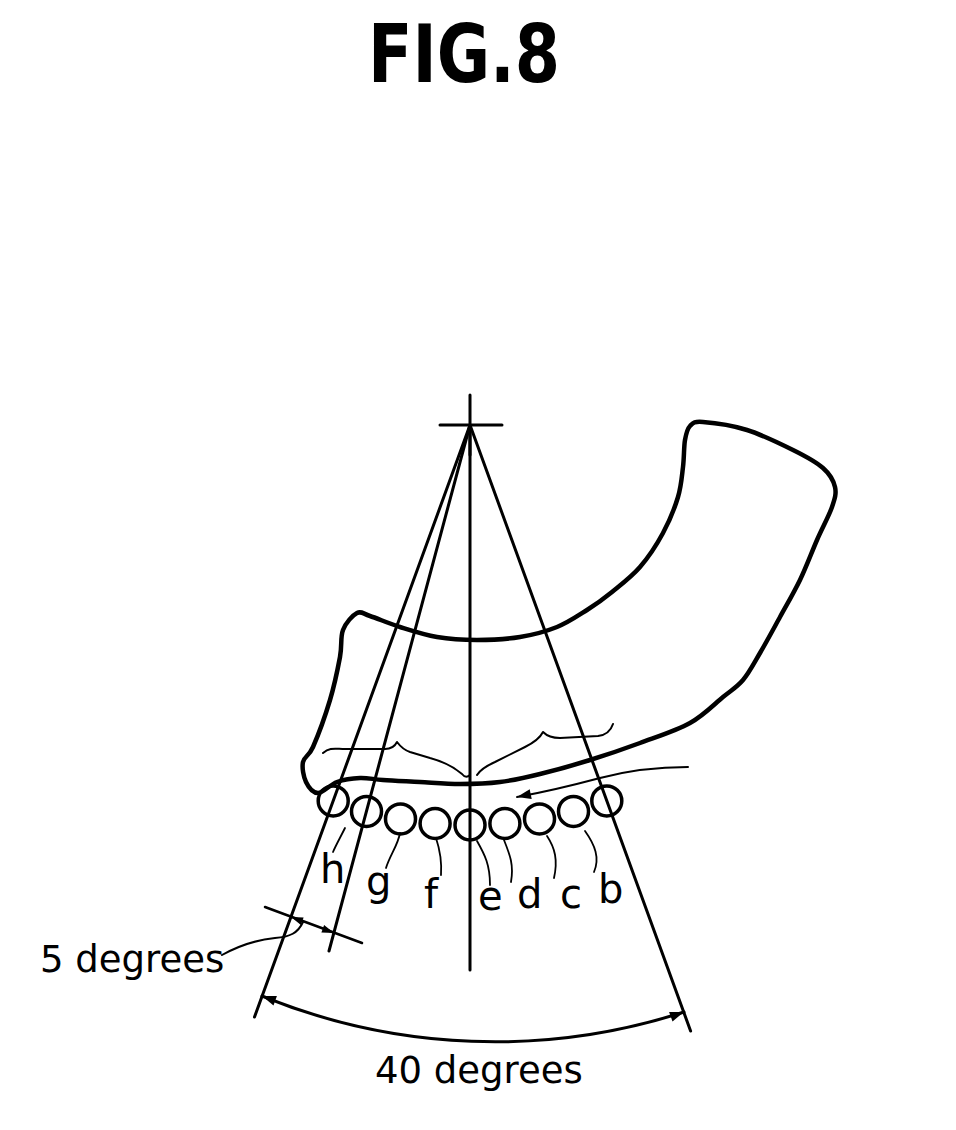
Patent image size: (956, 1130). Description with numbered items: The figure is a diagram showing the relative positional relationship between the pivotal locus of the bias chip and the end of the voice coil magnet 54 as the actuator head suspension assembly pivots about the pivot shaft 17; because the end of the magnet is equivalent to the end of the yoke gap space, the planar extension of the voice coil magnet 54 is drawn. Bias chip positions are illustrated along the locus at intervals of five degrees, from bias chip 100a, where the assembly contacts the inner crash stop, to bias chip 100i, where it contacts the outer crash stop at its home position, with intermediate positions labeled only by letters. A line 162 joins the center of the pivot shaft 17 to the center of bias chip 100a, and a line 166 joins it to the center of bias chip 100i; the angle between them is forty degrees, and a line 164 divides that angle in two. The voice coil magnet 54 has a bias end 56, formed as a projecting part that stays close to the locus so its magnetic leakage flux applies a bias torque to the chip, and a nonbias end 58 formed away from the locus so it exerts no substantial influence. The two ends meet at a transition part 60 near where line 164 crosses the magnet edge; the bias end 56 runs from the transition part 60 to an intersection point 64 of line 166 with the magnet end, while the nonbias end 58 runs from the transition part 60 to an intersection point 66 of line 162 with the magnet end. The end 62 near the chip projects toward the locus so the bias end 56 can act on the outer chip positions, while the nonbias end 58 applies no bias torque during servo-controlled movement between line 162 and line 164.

The pivot shaft 17 is at (469, 424).
The voice coil magnet 54 is at (767, 648).
The bias end 56 is at (396, 741).
The nonbias end 58 is at (545, 737).
The transition part 60 is at (479, 757).
The end of the voice coil magnet near bias chip 100d 62 is at (627, 773).
The intersection point of line 166 and the magnet end 64 is at (328, 770).
The intersection point of line 162 and the magnet end 66 is at (600, 750).
The bias chip 100i is at (317, 802).
The bias chip 100a is at (627, 808).
The line 162 is at (673, 977).
The line 164 is at (474, 952).
The line 166 is at (270, 962).